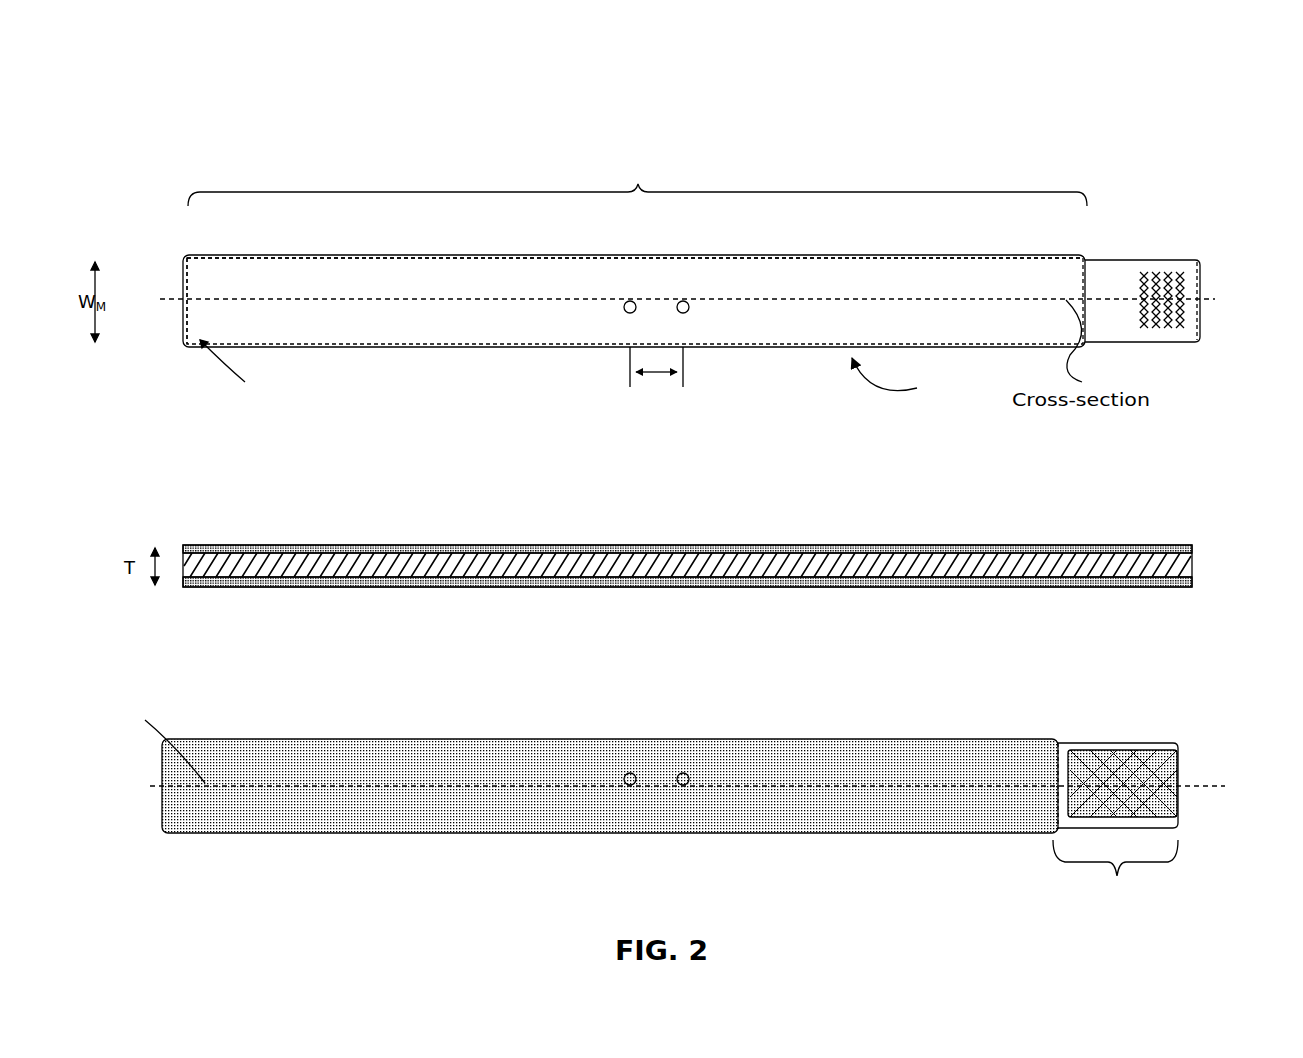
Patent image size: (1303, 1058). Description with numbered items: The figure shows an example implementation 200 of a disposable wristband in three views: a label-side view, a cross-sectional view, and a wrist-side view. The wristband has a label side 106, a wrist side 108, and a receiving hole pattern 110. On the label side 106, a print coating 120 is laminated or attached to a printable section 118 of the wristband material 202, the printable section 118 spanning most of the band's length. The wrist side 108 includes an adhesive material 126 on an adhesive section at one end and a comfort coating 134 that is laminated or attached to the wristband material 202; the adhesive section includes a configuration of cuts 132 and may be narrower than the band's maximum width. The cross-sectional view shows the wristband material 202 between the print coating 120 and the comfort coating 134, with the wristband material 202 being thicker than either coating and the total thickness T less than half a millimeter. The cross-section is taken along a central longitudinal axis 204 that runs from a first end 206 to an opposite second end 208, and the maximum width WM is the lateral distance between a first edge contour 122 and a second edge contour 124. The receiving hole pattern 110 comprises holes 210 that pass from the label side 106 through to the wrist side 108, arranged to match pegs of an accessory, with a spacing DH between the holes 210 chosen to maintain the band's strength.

The example implementation 200 is at (176, 66).
The label side 106 is at (366, 372).
The wrist side 108 is at (386, 848).
The receiving hole pattern 110 is at (608, 329).
The printable section 118 is at (637, 180).
The print coating 120 is at (332, 524).
The first edge contour 122 is at (792, 249).
The second edge contour 124 is at (1148, 588).
The adhesive material 126 is at (1115, 826).
The cuts 132 is at (1176, 326).
The comfort coating 134 is at (982, 769).
The wristband material 202 is at (1192, 563).
The central longitudinal axis 204 is at (1215, 296).
The first end 206 is at (1208, 320).
The second end 208 is at (178, 268).
The holes 210 is at (636, 312).